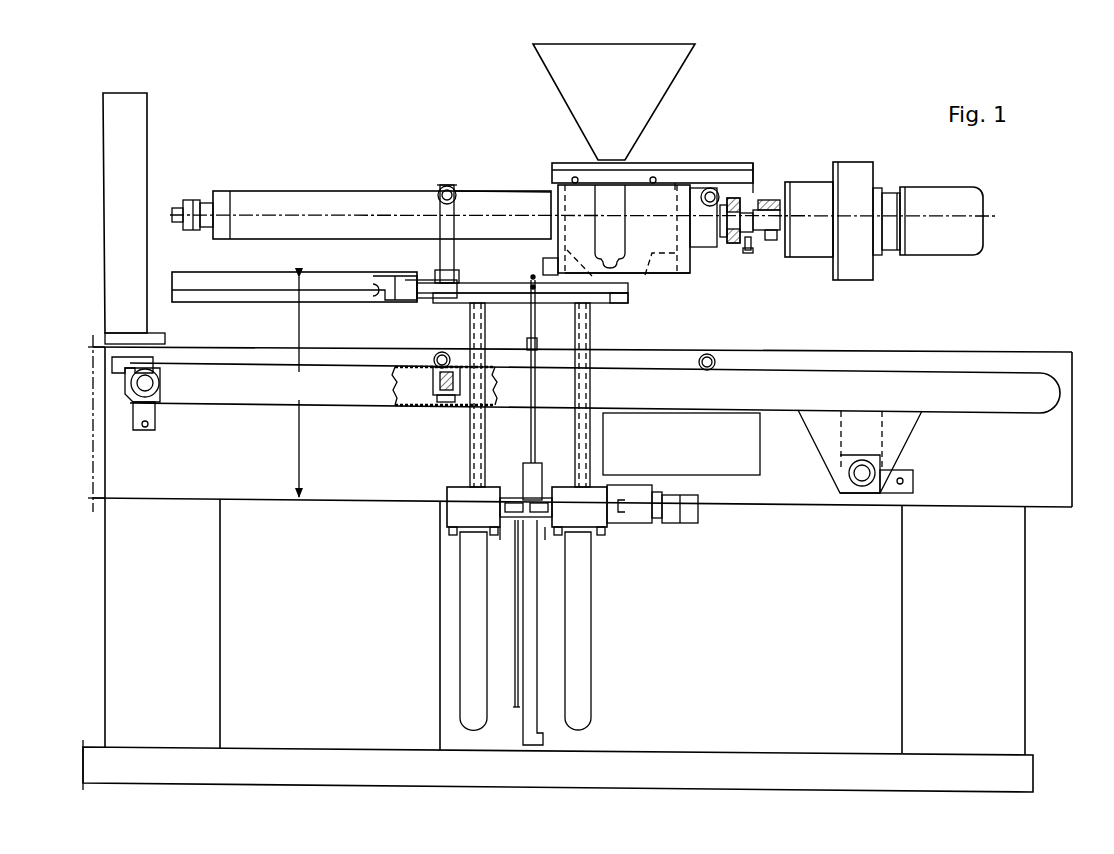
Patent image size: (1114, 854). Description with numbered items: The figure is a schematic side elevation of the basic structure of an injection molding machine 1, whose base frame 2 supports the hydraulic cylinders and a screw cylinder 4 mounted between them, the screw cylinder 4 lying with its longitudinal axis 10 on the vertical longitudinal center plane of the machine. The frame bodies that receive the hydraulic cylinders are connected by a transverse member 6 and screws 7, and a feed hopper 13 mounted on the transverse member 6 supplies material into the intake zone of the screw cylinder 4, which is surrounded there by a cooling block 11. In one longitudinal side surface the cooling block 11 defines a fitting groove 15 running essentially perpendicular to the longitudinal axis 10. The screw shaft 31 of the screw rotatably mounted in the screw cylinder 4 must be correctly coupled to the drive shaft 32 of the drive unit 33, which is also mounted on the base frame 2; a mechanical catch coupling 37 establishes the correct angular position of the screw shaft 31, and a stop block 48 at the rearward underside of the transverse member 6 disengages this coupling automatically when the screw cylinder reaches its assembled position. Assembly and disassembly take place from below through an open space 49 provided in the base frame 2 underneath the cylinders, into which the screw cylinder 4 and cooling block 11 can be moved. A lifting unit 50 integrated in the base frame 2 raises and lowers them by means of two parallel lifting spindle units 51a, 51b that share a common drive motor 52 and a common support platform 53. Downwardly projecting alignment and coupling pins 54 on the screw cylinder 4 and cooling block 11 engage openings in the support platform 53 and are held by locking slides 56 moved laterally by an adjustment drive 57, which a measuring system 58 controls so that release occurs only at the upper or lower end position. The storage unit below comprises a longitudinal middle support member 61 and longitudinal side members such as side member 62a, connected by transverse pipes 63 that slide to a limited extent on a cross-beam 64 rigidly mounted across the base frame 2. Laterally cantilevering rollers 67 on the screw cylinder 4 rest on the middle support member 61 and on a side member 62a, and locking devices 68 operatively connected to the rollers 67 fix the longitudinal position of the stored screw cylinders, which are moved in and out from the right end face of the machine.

The injection molding machine 1 is at (955, 305).
The base frame 2 is at (1025, 548).
The screw cylinder 4 is at (480, 205).
The transverse member 6 is at (690, 175).
The screws 7 is at (572, 180).
The longitudinal axis 10 is at (343, 215).
The cooling block 11 is at (670, 268).
The feed hopper 13 is at (585, 88).
The fitting groove 15 is at (610, 205).
The screw shaft 31 is at (755, 235).
The drive shaft 32 is at (768, 200).
The drive unit 33 is at (855, 185).
The mechanical catch coupling 37 is at (748, 252).
The stop block 48 is at (740, 195).
The open space 49 is at (302, 387).
The lifting unit 50 is at (577, 433).
The lifting spindle unit 51a is at (476, 454).
The lifting spindle unit 51b is at (595, 490).
The drive motor 52 is at (683, 496).
The support platform 53 is at (512, 284).
The alignment and coupling pins 54 is at (455, 264).
The locking slides 56 is at (428, 292).
The adjustment drive 57 is at (294, 304).
The measuring system 58 is at (525, 472).
The longitudinal middle support member 61 is at (887, 430).
The longitudinal side member 62a is at (935, 402).
The transverse pipes 63 is at (158, 386).
The cross-beam 64 is at (150, 392).
The rollers 67 is at (447, 186).
The locking devices 68 is at (425, 375).